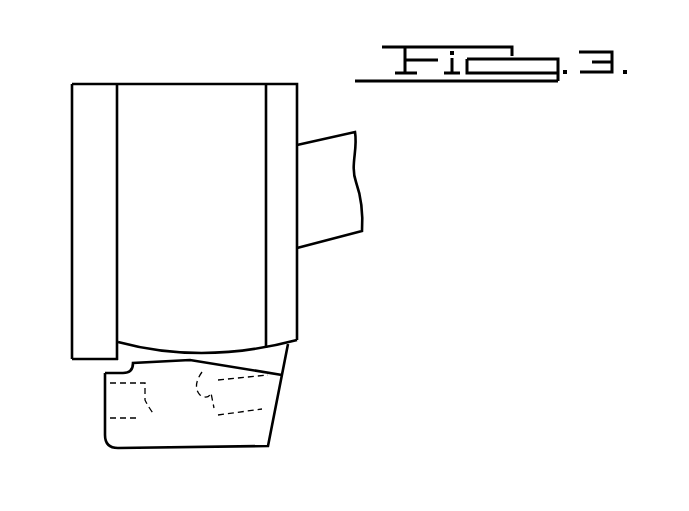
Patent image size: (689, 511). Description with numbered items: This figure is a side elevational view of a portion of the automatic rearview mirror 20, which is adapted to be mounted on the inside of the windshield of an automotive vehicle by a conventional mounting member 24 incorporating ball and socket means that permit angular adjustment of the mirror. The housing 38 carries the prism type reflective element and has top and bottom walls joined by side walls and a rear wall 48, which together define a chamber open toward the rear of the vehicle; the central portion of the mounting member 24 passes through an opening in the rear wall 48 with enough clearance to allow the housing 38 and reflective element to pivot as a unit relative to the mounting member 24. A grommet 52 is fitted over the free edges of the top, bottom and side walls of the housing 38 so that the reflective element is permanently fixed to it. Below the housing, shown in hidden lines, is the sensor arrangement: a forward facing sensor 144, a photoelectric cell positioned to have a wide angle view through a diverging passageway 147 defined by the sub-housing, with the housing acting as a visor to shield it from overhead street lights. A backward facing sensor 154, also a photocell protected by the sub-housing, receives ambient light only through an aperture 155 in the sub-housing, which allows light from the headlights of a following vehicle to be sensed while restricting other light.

The automatic rearview mirror 20 is at (220, 78).
The mounting member 24 is at (331, 133).
The housing 38 is at (142, 97).
The rear wall 48 is at (300, 284).
The grommet 52 is at (92, 83).
The forward facing sensor 144 is at (202, 372).
The diverging passageway 147 is at (238, 417).
The backward facing sensor 154 is at (153, 414).
The aperture 155 is at (118, 418).